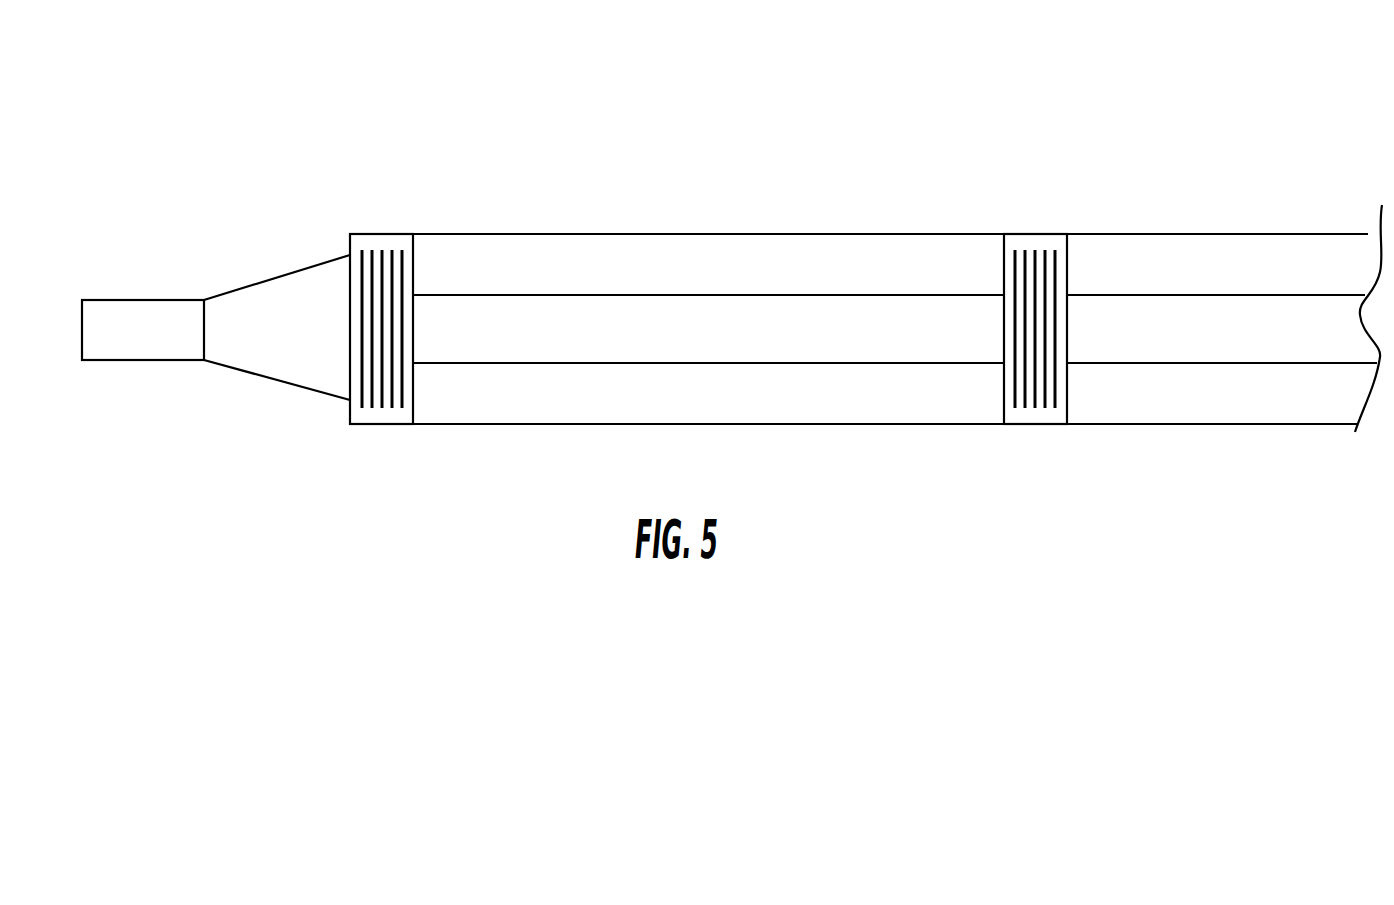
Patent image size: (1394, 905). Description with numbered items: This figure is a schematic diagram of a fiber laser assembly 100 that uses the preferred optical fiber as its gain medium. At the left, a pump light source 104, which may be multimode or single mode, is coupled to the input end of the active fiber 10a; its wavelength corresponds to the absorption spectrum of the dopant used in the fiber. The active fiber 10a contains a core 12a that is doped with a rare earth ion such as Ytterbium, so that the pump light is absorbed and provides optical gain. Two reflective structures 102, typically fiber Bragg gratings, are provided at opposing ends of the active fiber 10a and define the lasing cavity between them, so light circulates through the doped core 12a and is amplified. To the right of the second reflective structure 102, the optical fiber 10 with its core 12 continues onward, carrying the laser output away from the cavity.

The optical fiber 10 is at (1225, 233).
The active fiber 10a is at (830, 233).
The core 12 is at (1268, 327).
The core 12a is at (890, 332).
The fiber laser assembly 100 is at (468, 528).
The reflective structures 102 is at (380, 245).
The pump light source 104 is at (153, 335).